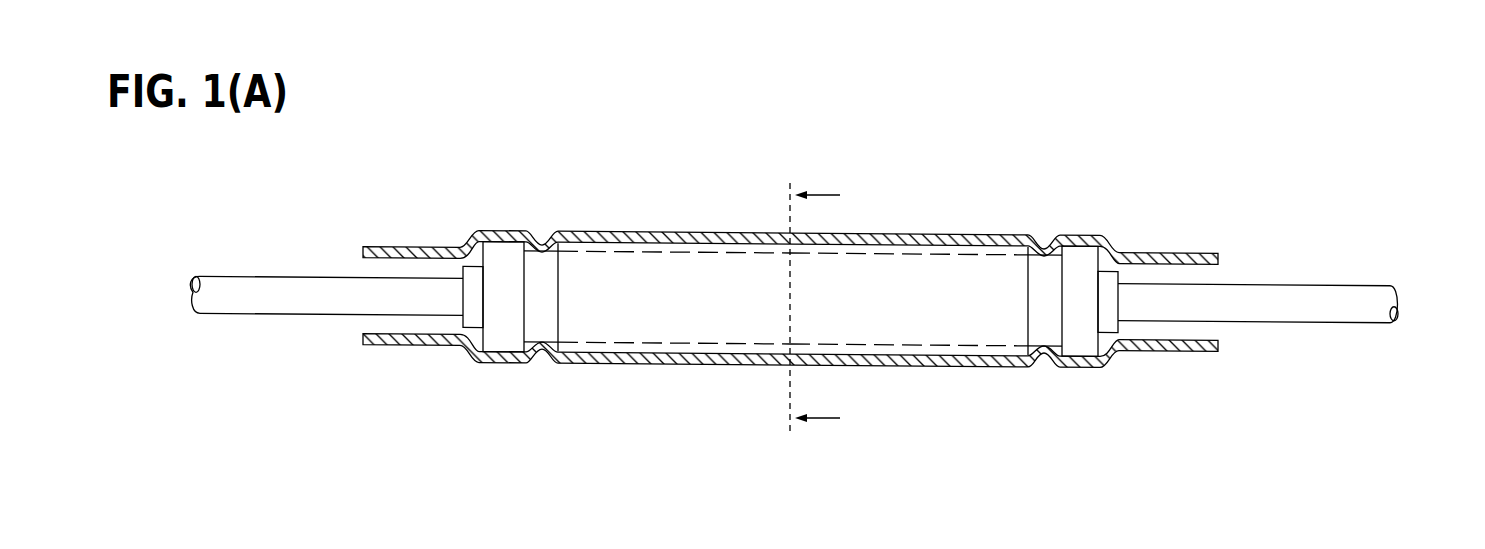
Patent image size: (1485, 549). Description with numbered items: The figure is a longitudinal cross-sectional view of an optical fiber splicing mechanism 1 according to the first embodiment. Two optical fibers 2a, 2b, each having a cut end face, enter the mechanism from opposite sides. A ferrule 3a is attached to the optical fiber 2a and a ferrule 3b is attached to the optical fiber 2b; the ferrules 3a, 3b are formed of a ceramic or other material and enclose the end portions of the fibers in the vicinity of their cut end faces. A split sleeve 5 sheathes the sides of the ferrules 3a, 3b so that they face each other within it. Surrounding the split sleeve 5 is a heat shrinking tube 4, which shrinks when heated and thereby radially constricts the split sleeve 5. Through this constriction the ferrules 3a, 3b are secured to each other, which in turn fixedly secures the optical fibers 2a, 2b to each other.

The optical fiber splicing mechanism 1 is at (1102, 157).
The optical fiber 2a is at (272, 277).
The optical fiber 2b is at (1325, 324).
The ferrule 3a is at (642, 325).
The ferrule 3b is at (980, 325).
The heat shrinking tube 4 is at (437, 248).
The split sleeve 5 is at (712, 253).